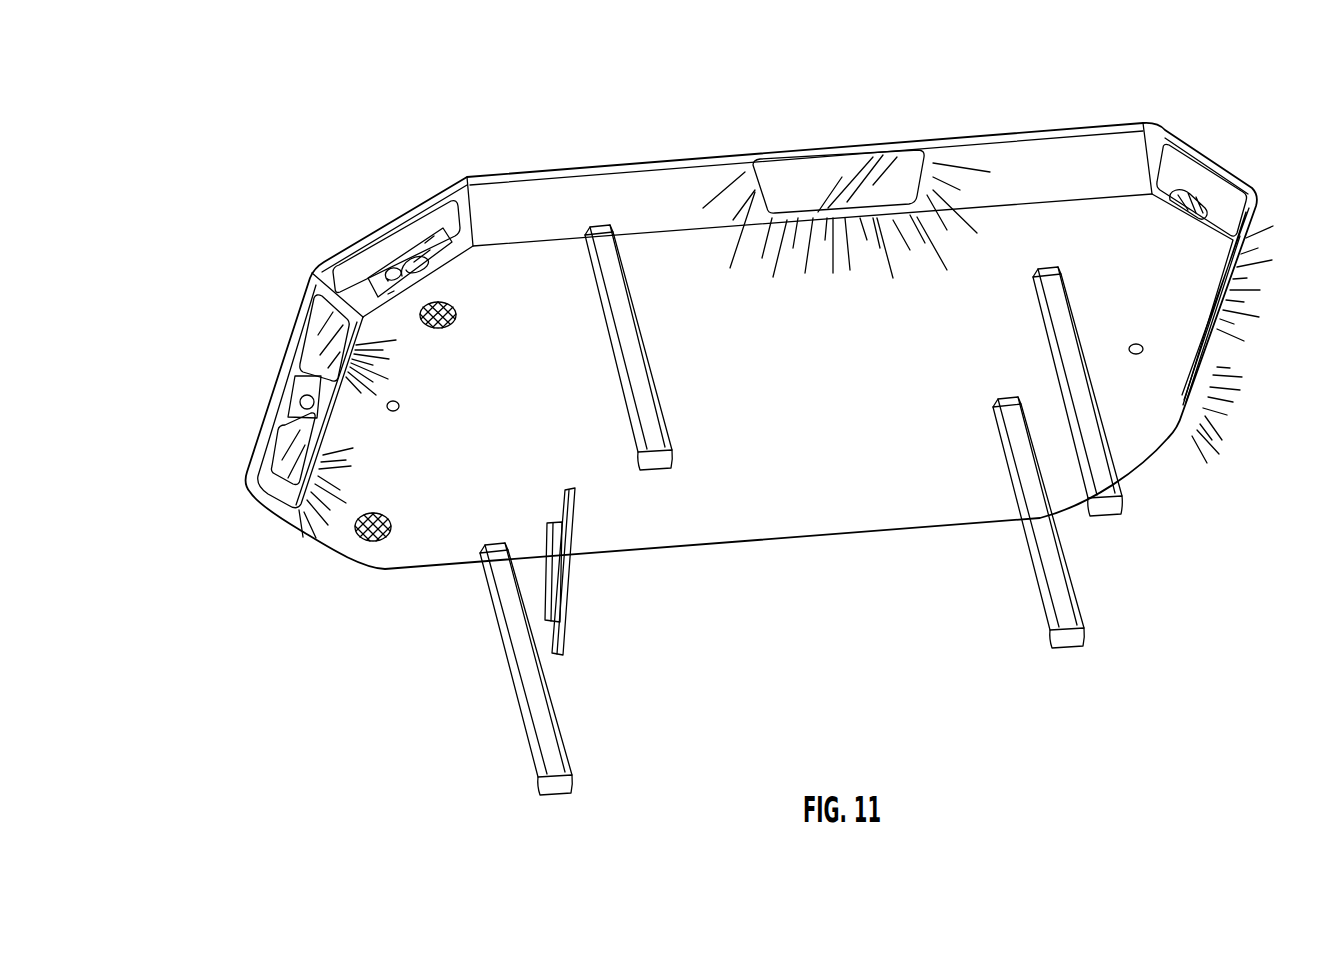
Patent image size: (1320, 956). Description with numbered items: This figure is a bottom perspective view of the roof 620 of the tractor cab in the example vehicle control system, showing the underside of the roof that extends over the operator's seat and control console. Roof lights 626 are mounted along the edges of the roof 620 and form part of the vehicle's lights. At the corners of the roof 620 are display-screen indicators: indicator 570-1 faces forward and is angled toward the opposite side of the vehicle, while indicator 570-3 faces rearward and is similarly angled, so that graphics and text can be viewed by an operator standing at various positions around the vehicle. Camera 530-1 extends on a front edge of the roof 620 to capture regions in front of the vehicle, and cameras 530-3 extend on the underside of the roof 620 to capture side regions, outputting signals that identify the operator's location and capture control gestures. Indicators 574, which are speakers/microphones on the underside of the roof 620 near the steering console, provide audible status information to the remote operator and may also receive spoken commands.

The roof 620 is at (701, 420).
The roof lights 626 is at (812, 160).
The indicator 570-1 is at (407, 248).
The indicator 570-3 is at (1183, 190).
The camera 530-1 is at (300, 398).
The camera 530-3 is at (399, 410).
The indicator 574 is at (457, 324).